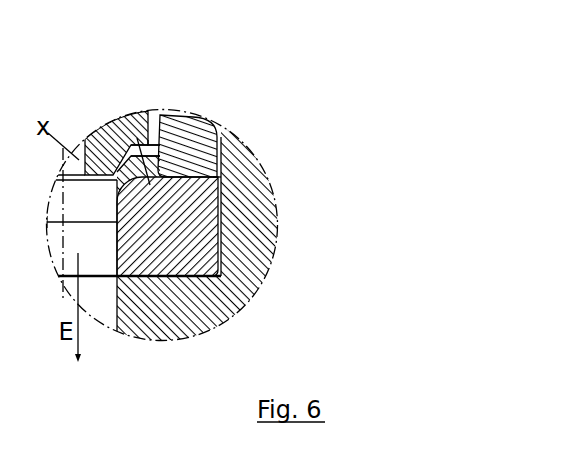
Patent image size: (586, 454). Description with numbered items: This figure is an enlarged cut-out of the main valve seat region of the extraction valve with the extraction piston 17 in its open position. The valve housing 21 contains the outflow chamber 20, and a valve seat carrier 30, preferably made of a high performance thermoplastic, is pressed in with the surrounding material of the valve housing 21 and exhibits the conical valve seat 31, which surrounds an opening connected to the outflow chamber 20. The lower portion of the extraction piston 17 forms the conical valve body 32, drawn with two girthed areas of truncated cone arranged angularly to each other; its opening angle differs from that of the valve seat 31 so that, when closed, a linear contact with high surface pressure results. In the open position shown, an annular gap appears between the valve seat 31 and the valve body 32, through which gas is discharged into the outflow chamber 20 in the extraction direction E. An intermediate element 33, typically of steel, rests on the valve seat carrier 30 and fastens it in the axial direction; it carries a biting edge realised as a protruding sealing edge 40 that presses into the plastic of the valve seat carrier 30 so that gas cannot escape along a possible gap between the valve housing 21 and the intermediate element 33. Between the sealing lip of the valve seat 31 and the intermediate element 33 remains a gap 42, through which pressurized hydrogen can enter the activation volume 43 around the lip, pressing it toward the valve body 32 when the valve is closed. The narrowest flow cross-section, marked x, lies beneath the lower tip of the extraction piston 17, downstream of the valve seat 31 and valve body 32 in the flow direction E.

The extraction piston 17 is at (132, 121).
The outflow chamber 20 is at (103, 307).
The valve housing 21 is at (245, 250).
The valve seat carrier 30 is at (204, 216).
The valve seat 31 is at (125, 152).
The valve body 32 is at (150, 185).
The intermediate element 33 is at (190, 138).
The sealing edge 40 is at (226, 171).
The gap 42 is at (189, 87).
The activation volume 43 is at (150, 150).